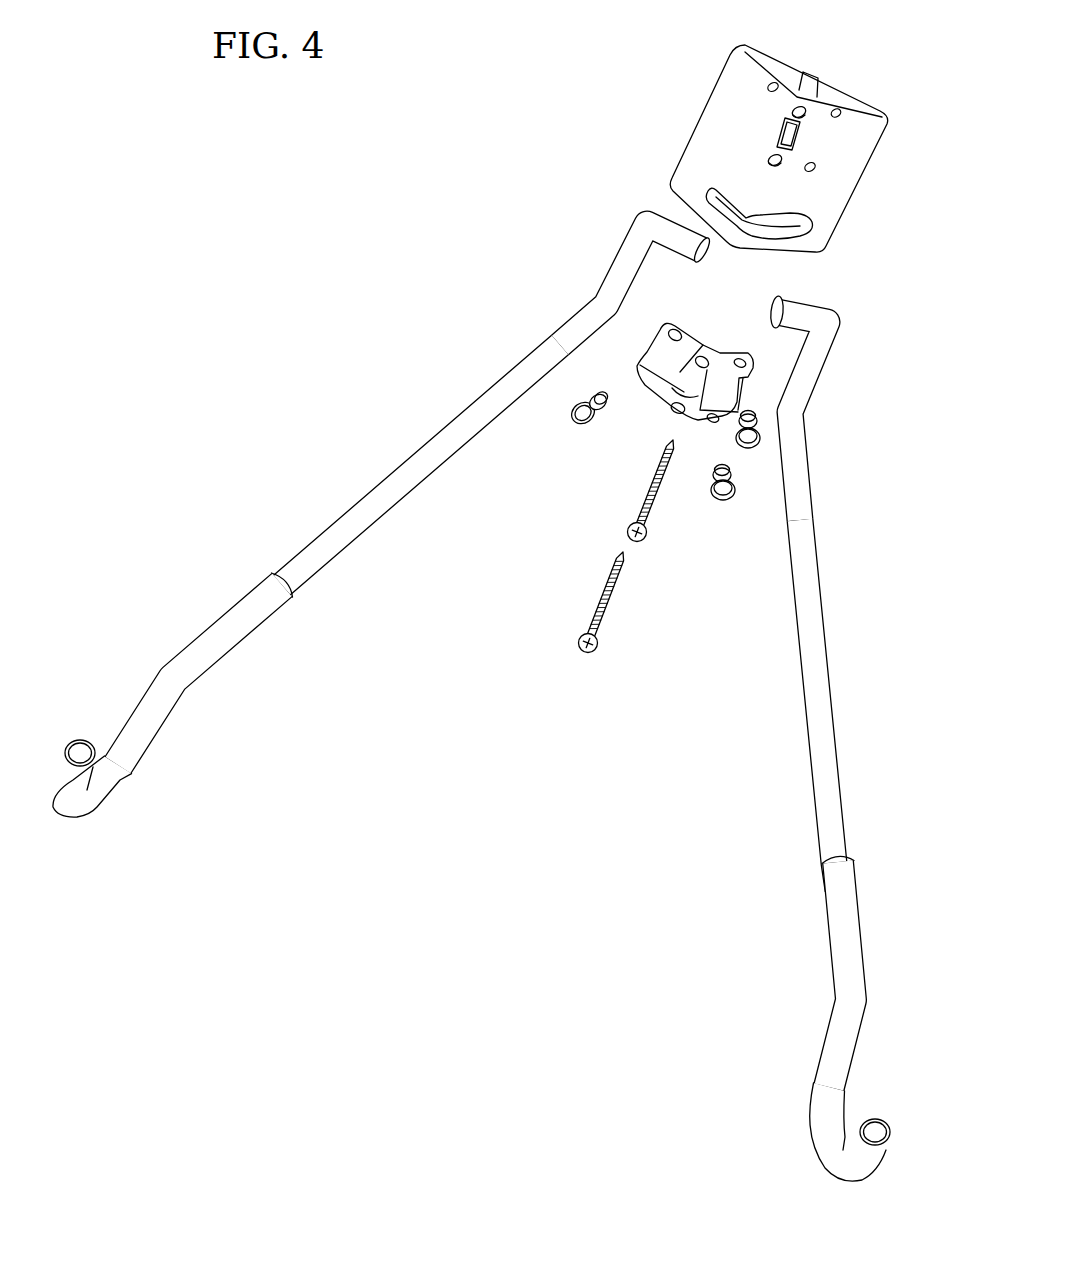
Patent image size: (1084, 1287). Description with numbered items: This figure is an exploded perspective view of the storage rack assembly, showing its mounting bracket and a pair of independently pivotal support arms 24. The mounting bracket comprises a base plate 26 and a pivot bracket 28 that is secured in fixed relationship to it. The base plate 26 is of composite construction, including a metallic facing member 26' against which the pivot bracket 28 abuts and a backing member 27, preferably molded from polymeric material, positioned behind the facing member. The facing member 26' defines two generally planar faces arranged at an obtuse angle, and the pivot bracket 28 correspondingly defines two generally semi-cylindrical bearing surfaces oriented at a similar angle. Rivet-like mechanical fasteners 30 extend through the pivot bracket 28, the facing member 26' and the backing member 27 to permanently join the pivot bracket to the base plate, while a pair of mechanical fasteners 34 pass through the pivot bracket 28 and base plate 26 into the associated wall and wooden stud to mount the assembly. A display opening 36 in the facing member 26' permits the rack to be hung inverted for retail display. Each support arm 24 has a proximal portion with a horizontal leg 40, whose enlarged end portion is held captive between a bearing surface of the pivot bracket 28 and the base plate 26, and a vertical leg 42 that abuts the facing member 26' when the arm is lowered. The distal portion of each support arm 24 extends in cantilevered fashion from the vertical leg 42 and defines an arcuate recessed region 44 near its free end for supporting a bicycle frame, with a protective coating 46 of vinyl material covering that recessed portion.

The support arm 24 is at (492, 702).
The base plate 26 is at (771, 134).
The metallic facing member 26' is at (850, 134).
The backing member 27 is at (777, 58).
The pivot bracket 28 is at (637, 387).
The mechanical fasteners 30 is at (590, 423).
The mechanical fasteners 34 is at (660, 503).
The display opening 36 is at (767, 217).
The horizontal leg 40 is at (661, 256).
The vertical leg 42 is at (625, 250).
The recessed region 44 is at (118, 772).
The protective coating 46 is at (257, 635).